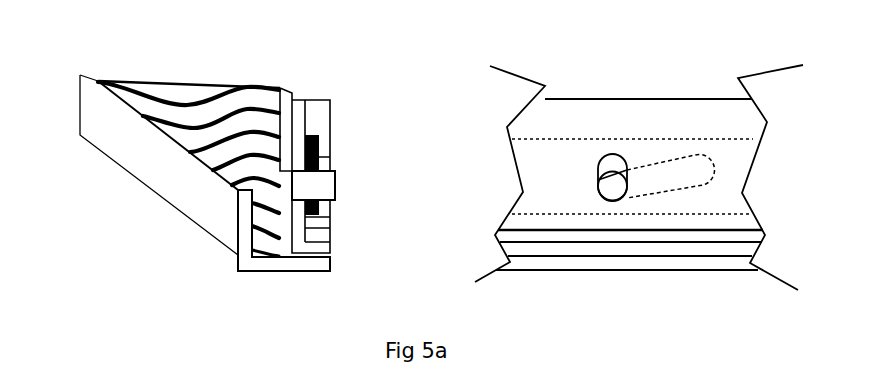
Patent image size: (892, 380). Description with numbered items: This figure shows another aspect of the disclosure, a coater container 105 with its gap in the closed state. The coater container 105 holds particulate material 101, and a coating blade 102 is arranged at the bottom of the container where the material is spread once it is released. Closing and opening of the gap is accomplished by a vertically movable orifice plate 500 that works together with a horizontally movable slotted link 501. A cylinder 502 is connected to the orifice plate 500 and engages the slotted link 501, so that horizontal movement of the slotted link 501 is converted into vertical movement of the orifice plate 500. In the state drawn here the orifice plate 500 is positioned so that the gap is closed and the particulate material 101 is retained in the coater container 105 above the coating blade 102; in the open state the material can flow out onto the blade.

The particulate material 101 is at (215, 90).
The coating blade 102 is at (285, 263).
The coater container 105 is at (170, 182).
The vertically movable orifice plate 500 is at (302, 95).
The horizontally movable slotted link 501 is at (319, 137).
The cylinder connected to the orifice plate 502 is at (326, 182).